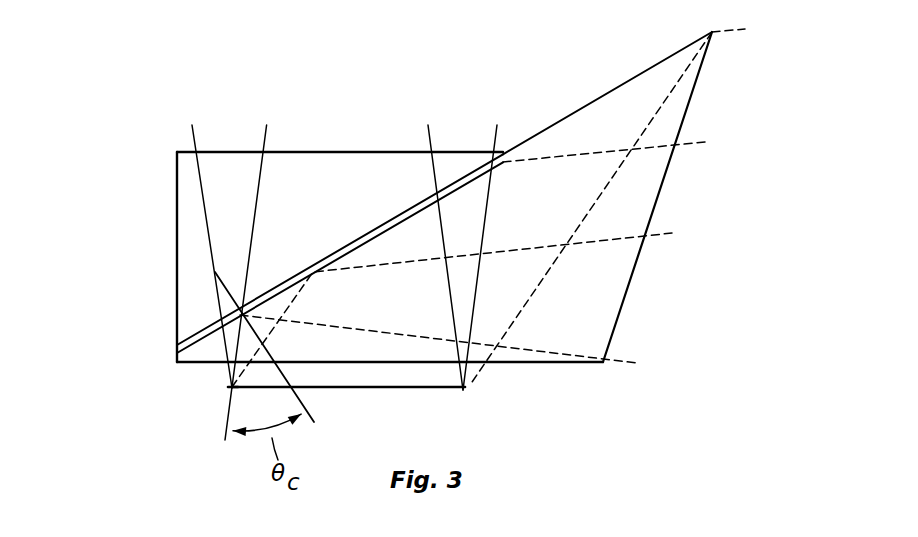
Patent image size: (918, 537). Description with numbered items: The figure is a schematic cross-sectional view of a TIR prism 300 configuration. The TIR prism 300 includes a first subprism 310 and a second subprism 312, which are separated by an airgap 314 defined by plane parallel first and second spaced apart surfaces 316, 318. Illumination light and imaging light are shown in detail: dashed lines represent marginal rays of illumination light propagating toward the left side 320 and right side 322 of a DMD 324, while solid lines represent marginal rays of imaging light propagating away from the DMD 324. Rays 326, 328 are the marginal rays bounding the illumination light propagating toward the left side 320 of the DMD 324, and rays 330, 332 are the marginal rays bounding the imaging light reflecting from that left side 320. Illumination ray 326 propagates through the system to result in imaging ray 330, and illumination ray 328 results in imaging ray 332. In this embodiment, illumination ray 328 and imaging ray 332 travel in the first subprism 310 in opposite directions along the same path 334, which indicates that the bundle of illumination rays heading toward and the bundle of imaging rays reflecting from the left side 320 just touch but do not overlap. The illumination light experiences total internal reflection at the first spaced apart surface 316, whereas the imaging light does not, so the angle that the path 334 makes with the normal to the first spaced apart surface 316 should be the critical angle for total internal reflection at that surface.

The TIR prism 300 is at (140, 170).
The first subprism 310 is at (582, 128).
The second subprism 312 is at (330, 162).
The airgap 314 is at (340, 253).
The first spaced apart surface 316 is at (366, 242).
The second spaced apart surface 318 is at (382, 225).
The left side of DMD 320 is at (230, 388).
The right side of DMD 322 is at (462, 388).
The DMD 324 is at (363, 390).
The illumination marginal ray 326 is at (650, 240).
The illumination marginal ray 328 is at (620, 357).
The imaging marginal ray 330 is at (199, 124).
The imaging marginal ray 332 is at (262, 130).
The common path 334 is at (225, 320).